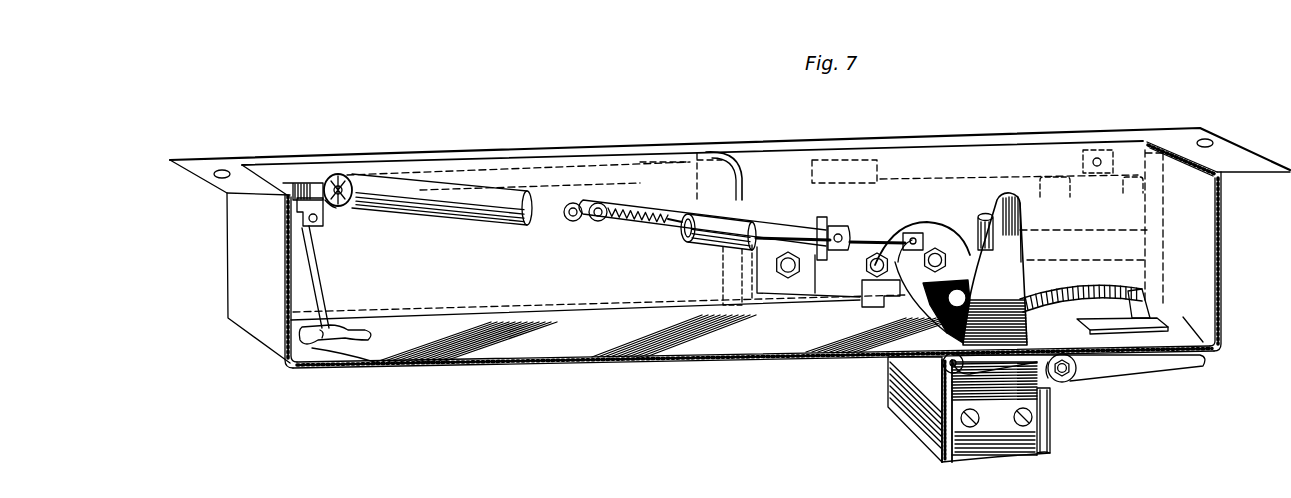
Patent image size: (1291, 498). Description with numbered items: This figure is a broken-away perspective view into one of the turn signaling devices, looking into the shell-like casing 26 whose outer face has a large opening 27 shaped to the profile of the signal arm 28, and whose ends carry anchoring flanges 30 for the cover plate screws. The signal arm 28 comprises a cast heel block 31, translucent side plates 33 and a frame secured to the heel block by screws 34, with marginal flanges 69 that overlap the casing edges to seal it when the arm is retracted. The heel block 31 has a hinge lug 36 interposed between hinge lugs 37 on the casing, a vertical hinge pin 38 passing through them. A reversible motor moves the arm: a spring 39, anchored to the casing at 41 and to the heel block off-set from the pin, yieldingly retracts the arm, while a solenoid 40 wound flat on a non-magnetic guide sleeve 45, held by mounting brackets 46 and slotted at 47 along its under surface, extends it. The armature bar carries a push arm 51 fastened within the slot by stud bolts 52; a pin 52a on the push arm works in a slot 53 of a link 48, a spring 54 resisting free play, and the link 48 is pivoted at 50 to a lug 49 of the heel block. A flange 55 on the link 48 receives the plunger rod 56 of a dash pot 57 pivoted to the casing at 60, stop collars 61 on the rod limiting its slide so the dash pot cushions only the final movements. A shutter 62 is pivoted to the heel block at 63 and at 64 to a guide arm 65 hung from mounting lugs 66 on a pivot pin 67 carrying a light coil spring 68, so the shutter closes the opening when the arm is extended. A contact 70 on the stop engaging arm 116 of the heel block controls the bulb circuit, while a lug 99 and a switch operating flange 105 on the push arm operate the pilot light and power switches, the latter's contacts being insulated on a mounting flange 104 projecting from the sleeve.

The casing 26 is at (260, 320).
The opening 27 is at (470, 368).
The signal arm 28 is at (1055, 445).
The anchoring flanges 30 is at (215, 194).
The heel block 31 is at (1010, 384).
The side plates 33 is at (928, 450).
The screws 34 is at (1015, 420).
The hinge lug 36 is at (1045, 357).
The hinge lugs 37 is at (1077, 360).
The hinge pin 38 is at (1072, 368).
The spring 39 is at (1090, 290).
The solenoid 40 is at (657, 143).
The spring anchor 41 is at (1145, 295).
The guide sleeve 45 is at (755, 153).
The mounting brackets 46 is at (1213, 190).
The slot 47 is at (1213, 233).
The link 48 is at (767, 218).
The lug 49 is at (937, 228).
The pivotal connection 50 is at (900, 242).
The push arm 51 is at (693, 197).
The stud bolts 52 is at (790, 282).
The pin 52a is at (600, 207).
The slot 53 is at (577, 222).
The spring 54 is at (632, 228).
The lug-acting flange 55 is at (850, 224).
The plunger rod 56 is at (795, 229).
The dash pot 57 is at (498, 223).
The dash pot pivot 60 is at (328, 177).
The stop collars 61 is at (913, 235).
The shutter 62 is at (590, 343).
The shutter pivot 63 is at (946, 363).
The pivot 64 is at (323, 357).
The guide arm 65 is at (313, 272).
The mounting lugs 66 is at (300, 182).
The pivot pin 67 is at (318, 219).
The coil spring 68 is at (328, 206).
The marginal flanges 69 is at (1043, 413).
The contact 70 is at (1003, 193).
The lug 99 is at (873, 304).
The mounting flange 104 is at (862, 145).
The switch operating flange 105 is at (826, 187).
The stop engaging arm 116 is at (1015, 257).